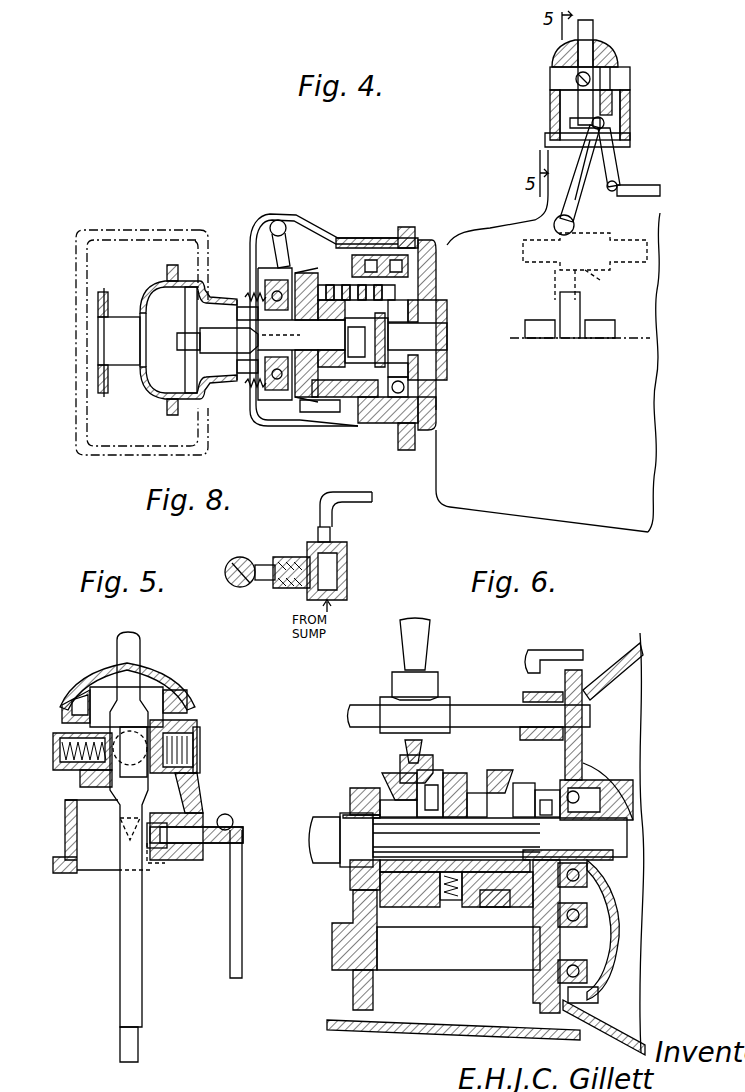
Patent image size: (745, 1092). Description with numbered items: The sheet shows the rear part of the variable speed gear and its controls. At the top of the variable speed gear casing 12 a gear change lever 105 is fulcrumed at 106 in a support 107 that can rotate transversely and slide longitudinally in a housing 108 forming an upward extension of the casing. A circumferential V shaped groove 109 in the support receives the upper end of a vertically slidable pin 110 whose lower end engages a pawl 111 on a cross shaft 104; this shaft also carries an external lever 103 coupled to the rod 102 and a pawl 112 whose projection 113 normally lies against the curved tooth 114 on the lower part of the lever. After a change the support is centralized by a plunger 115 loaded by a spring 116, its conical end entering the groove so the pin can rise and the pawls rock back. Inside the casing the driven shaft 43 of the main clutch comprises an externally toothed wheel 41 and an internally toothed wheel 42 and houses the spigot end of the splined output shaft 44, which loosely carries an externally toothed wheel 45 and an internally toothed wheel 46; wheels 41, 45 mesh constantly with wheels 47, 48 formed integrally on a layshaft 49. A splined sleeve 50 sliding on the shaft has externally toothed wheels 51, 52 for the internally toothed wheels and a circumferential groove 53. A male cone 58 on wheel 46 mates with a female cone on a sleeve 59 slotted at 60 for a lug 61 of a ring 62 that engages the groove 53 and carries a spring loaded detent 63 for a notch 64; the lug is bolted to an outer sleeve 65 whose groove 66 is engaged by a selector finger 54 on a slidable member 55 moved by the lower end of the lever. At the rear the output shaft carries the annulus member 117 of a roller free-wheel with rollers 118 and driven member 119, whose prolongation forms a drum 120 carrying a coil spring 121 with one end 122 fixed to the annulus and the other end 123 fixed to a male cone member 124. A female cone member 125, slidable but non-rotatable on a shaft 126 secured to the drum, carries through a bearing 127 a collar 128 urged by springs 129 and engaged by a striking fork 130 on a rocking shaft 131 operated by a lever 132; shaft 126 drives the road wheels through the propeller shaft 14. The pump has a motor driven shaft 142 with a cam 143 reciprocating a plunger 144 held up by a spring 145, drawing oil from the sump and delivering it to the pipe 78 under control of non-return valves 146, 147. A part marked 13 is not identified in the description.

In FIG. 4, the variable speed gear casing 12 is at (433, 492).
In FIG. 4, the gear housing 13 is at (340, 415).
In FIG. 4, the propeller shaft 14 is at (95, 310).
In FIG. 6, the externally toothed wheel 41 is at (574, 790).
In FIG. 6, the internally toothed wheel 42 is at (548, 800).
In FIG. 6, the driven shaft 43 is at (500, 837).
In FIG. 4, the splined output shaft 44 is at (432, 340).
In FIG. 6, the splined output shaft 44 is at (330, 825).
In FIG. 6, the externally toothed wheel 45 is at (355, 787).
In FIG. 6, the internally toothed wheel 46 is at (352, 872).
In FIG. 6, the externally toothed wheel 47 is at (545, 1010).
In FIG. 6, the externally toothed wheel 48 is at (373, 1003).
In FIG. 6, the layshaft 49 is at (455, 960).
In FIG. 6, the splined sleeve 50 is at (515, 790).
In FIG. 6, the externally toothed wheel 51 is at (540, 790).
In FIG. 6, the externally toothed wheel 52 is at (355, 900).
In FIG. 6, the circumferential groove 53 is at (430, 885).
In FIG. 4, the selector finger 54 is at (556, 283).
In FIG. 6, the selector finger 54 is at (418, 745).
In FIG. 4, the slidable member 55 is at (615, 272).
In FIG. 6, the slidable member 55 is at (395, 705).
In FIG. 6, the male cone 58 is at (388, 780).
In FIG. 6, the sleeve 59 is at (480, 893).
In FIG. 6, the longitudinal slot 60 is at (460, 778).
In FIG. 6, the lug 61 is at (480, 790).
In FIG. 6, the ring 62 is at (490, 785).
In FIG. 6, the spring loaded detent 63 is at (448, 893).
In FIG. 6, the notch 64 is at (455, 893).
In FIG. 6, the outer sleeve 65 is at (400, 760).
In FIG. 6, the groove 66 is at (430, 777).
In FIG. 8, the pipe 78 is at (360, 493).
In FIG. 4, the rod 102 is at (652, 196).
In FIG. 4, the lever 103 is at (615, 165).
In FIG. 5, the lever 103 is at (248, 877).
In FIG. 4, the cross shaft 104 is at (612, 128).
In FIG. 5, the cross shaft 104 is at (232, 814).
In FIG. 4, the gear change lever 105 is at (580, 30).
In FIG. 5, the gear change lever 105 is at (130, 645).
In FIG. 6, the gear change lever 105 is at (407, 640).
In FIG. 4, the fulcrum 106 is at (555, 92).
In FIG. 5, the fulcrum 106 is at (170, 733).
In FIG. 4, the support 107 is at (575, 74).
In FIG. 5, the support 107 is at (130, 737).
In FIG. 4, the housing 108 is at (558, 115).
In FIG. 5, the housing 108 is at (130, 803).
In FIG. 4, the V shaped groove 109 is at (618, 62).
In FIG. 4, the vertically slidable pin 110 is at (614, 100).
In FIG. 5, the vertically slidable pin 110 is at (140, 830).
In FIG. 4, the pawl 111 is at (605, 121).
In FIG. 4, the pawl 112 is at (580, 122).
In FIG. 5, the pawl 112 is at (157, 825).
In FIG. 4, the projection 113 is at (596, 140).
In FIG. 5, the projection 113 is at (153, 862).
In FIG. 4, the curved tooth 114 is at (575, 140).
In FIG. 5, the curved tooth 114 is at (188, 833).
In FIG. 5, the plunger 115 is at (107, 740).
In FIG. 5, the spring 116 is at (80, 725).
In FIG. 4, the annulus member 117 is at (442, 412).
In FIG. 4, the rollers 118 is at (440, 398).
In FIG. 4, the driven member 119 is at (438, 378).
In FIG. 4, the drum 120 is at (338, 250).
In FIG. 4, the coil spring 121 is at (362, 254).
In FIG. 4, the spring end 122 is at (392, 254).
In FIG. 4, the spring end 123 is at (300, 413).
In FIG. 4, the male cone member 124 is at (305, 272).
In FIG. 4, the female cone member 125 is at (312, 428).
In FIG. 4, the shaft 126 is at (262, 362).
In FIG. 4, the bearing 127 is at (253, 412).
In FIG. 4, the collar 128 is at (266, 284).
In FIG. 4, the springs 129 is at (250, 295).
In FIG. 4, the striking fork 130 is at (265, 258).
In FIG. 4, the rocking shaft 131 is at (245, 313).
In FIG. 4, the lever 132 is at (268, 224).
In FIG. 8, the motor driven shaft 142 is at (243, 557).
In FIG. 8, the cam 143 is at (232, 582).
In FIG. 8, the reciprocating plunger 144 is at (270, 585).
In FIG. 8, the spring 145 is at (292, 560).
In FIG. 4, the non-return valve 146 is at (160, 290).
In FIG. 8, the non-return valve 146 is at (344, 576).
In FIG. 8, the non-return valve 147 is at (345, 550).